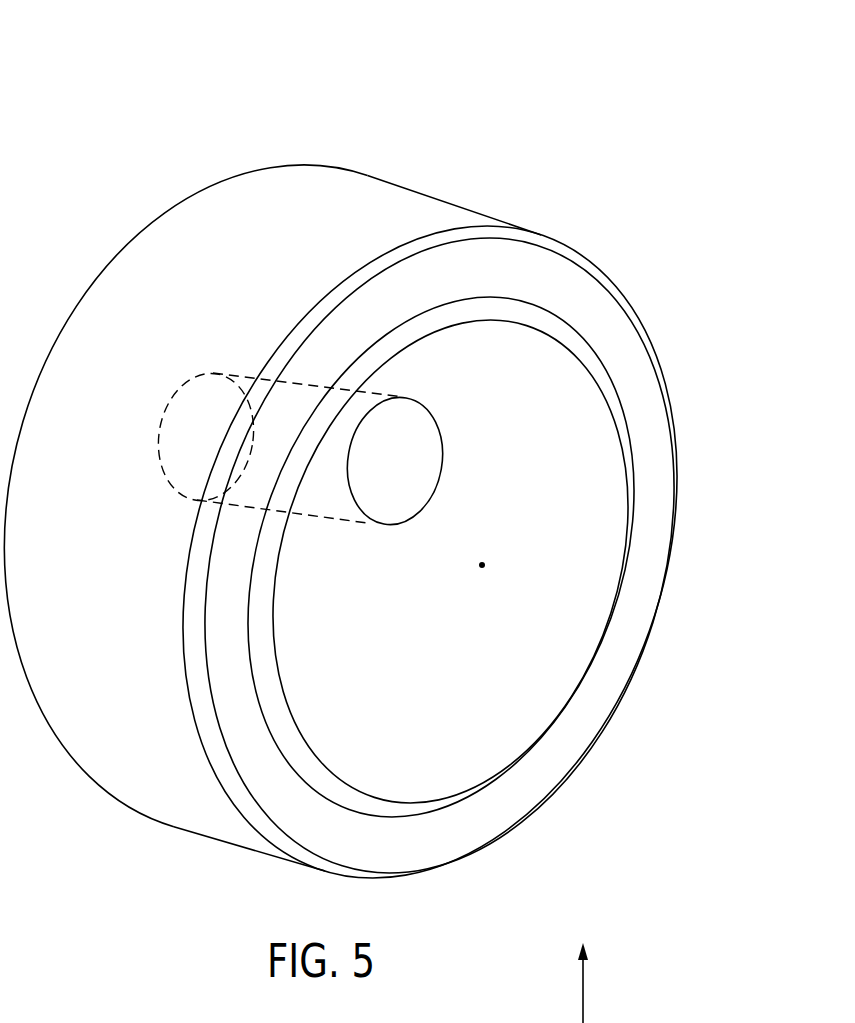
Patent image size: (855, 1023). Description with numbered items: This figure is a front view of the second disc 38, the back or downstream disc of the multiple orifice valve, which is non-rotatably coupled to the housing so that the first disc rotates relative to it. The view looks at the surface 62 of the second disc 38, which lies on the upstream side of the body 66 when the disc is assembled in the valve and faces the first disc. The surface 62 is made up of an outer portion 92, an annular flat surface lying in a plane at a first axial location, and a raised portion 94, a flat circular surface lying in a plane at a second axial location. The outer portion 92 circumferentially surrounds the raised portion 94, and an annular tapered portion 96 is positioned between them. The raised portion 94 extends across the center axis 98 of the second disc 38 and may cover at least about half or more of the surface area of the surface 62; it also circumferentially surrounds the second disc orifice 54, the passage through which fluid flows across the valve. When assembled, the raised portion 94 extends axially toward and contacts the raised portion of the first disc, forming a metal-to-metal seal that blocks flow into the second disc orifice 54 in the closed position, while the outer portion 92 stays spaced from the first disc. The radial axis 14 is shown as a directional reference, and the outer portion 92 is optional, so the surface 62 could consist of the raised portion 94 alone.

The second disc 38 is at (614, 70).
The surface 62 is at (586, 132).
The body 66 is at (393, 192).
The outer portion 92 is at (667, 440).
The raised portion 94 is at (600, 573).
The tapered portion 96 is at (260, 603).
The center axis 98 is at (484, 567).
The second disc orifice 54 is at (407, 423).
The radial axis 14 is at (582, 1018).